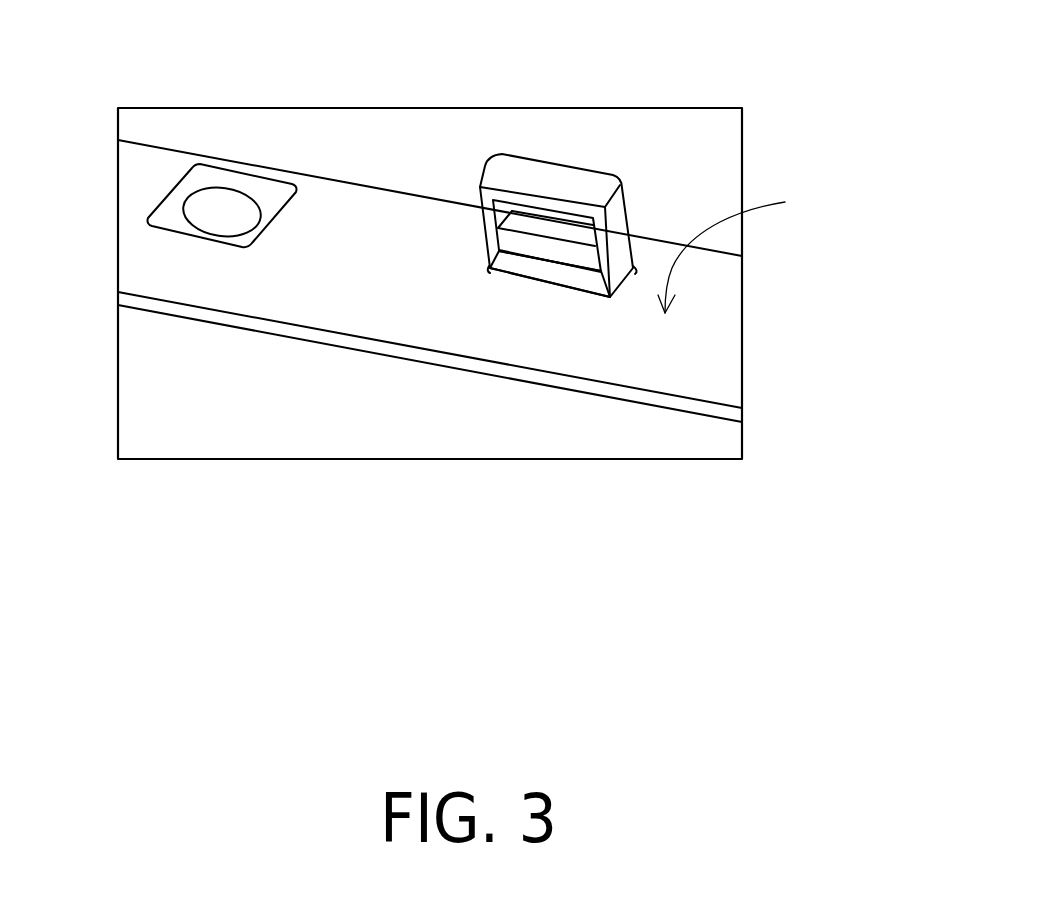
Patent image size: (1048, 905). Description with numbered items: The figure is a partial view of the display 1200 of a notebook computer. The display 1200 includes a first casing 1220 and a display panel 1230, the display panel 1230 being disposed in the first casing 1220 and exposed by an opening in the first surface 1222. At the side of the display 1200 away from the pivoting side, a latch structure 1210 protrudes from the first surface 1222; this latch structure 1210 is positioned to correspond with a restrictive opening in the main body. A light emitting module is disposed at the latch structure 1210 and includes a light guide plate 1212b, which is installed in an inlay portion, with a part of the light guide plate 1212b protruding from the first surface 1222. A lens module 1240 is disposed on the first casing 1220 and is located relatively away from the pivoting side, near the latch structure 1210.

The display 1200 is at (1027, 573).
The latch structure 1210 is at (598, 178).
The light guide plate 1212b is at (567, 277).
The first casing 1220 is at (433, 228).
The first surface 1222 is at (760, 244).
The display panel 1230 is at (265, 370).
The lens module 1240 is at (213, 182).